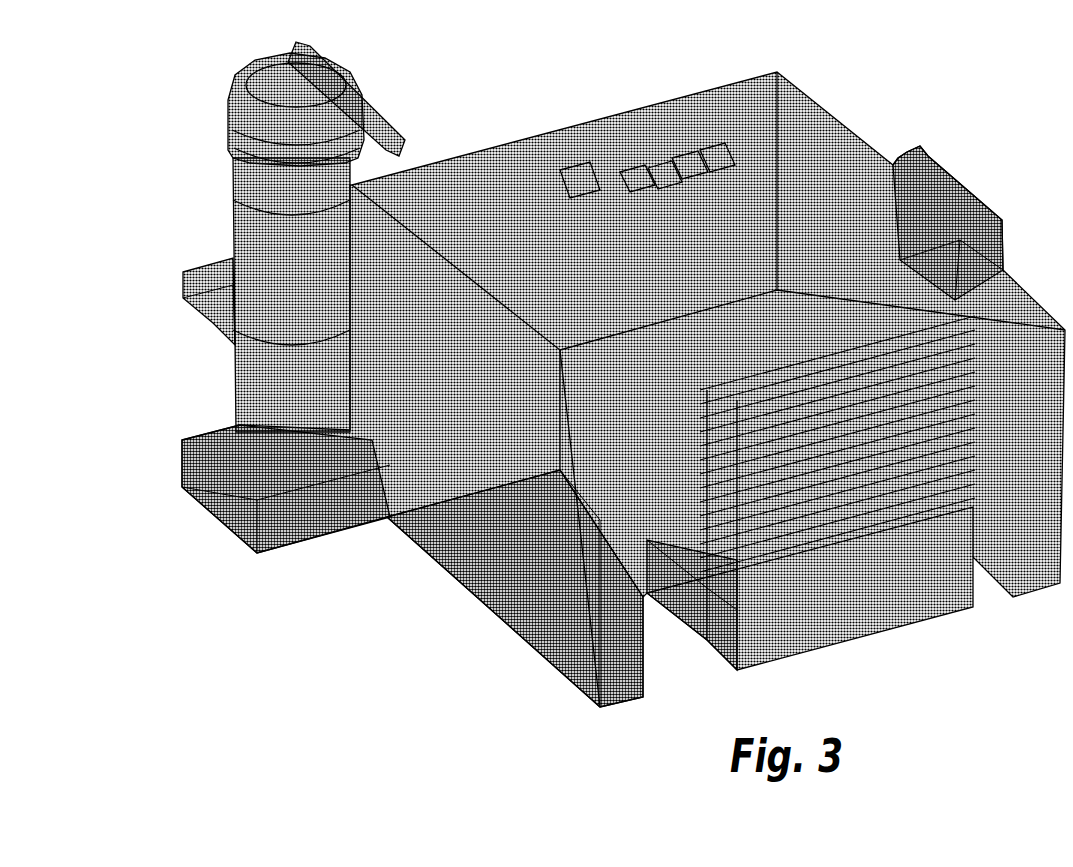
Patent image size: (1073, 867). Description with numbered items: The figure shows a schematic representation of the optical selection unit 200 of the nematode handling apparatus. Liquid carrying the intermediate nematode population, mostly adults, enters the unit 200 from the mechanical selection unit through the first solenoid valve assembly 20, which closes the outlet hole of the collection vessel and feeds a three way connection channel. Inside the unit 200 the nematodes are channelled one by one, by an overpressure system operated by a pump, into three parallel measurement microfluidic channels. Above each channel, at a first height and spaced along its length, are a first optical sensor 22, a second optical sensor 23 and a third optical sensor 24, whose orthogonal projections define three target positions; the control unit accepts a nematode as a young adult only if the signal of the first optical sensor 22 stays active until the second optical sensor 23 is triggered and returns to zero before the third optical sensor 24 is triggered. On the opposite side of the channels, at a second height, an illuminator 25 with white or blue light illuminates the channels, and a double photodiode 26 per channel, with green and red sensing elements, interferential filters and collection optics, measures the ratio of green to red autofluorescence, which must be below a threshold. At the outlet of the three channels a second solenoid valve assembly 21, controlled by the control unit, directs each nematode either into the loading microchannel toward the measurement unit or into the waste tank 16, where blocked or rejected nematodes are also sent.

The optical selection unit 200 is at (920, 66).
The waste tank 16 is at (228, 98).
The first solenoid valve assembly 20 is at (933, 162).
The second solenoid valve assembly 21 is at (420, 545).
The first optical sensor 22 is at (685, 167).
The second optical sensor 23 is at (658, 177).
The third optical sensor 24 is at (637, 177).
The illuminator 25 is at (677, 550).
The double photodiode 26 is at (578, 183).